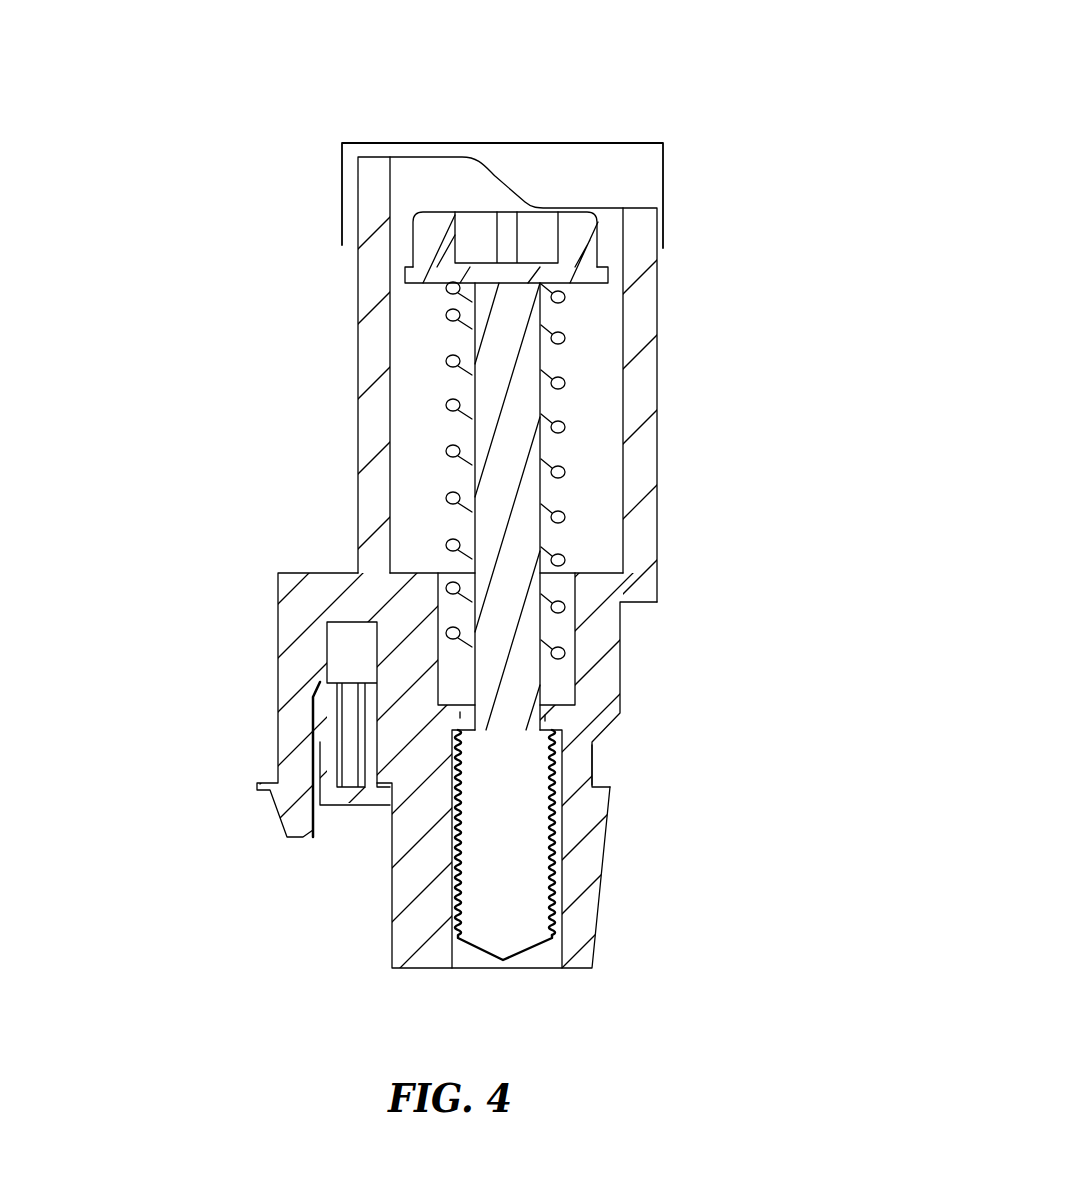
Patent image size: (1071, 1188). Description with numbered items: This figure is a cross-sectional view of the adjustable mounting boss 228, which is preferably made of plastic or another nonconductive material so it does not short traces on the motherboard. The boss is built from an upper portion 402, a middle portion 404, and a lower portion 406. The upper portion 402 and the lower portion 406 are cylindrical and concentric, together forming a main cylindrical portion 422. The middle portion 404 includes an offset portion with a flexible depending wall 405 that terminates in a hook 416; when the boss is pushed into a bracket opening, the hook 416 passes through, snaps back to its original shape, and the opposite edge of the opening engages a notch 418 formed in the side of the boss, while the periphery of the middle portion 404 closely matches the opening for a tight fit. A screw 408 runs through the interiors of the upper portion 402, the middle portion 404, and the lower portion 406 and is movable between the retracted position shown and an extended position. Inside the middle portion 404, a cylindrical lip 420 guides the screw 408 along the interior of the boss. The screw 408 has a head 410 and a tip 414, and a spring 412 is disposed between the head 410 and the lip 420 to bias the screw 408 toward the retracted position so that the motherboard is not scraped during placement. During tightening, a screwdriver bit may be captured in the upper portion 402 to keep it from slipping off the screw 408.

The adjustable mounting boss 228 is at (752, 106).
The main cylindrical portion 422 is at (503, 143).
The head 410 is at (577, 267).
The spring 412 is at (452, 319).
The screw 408 is at (466, 435).
The upper portion 402 is at (660, 512).
The flexible depending wall 405 is at (278, 637).
The middle portion 404 is at (623, 638).
The hook 416 is at (266, 793).
The notch 418 is at (594, 757).
The lower portion 406 is at (604, 864).
The cylindrical lip 420 is at (545, 721).
The tip 414 is at (492, 900).